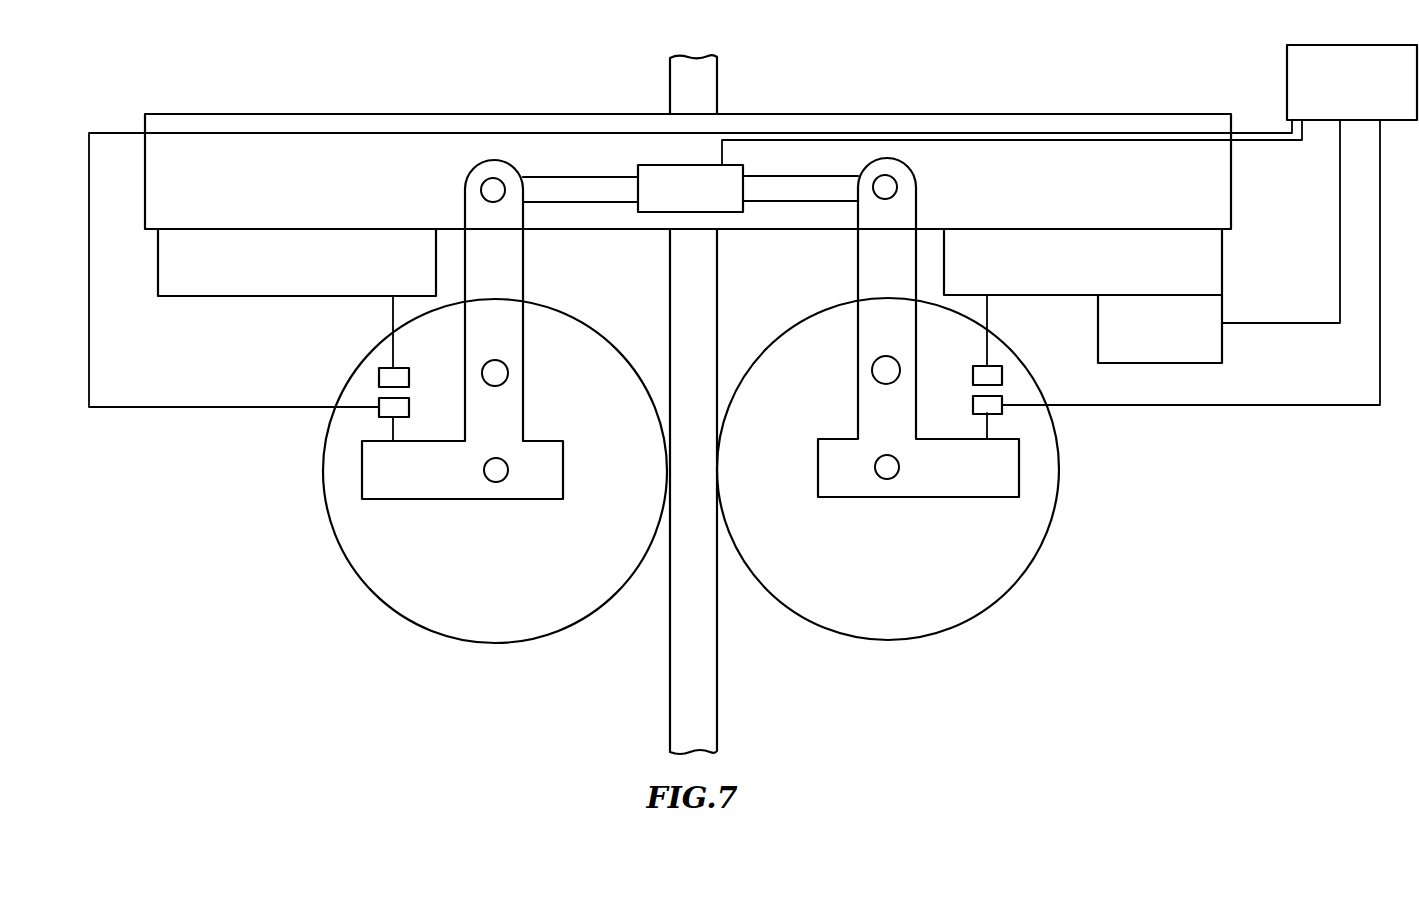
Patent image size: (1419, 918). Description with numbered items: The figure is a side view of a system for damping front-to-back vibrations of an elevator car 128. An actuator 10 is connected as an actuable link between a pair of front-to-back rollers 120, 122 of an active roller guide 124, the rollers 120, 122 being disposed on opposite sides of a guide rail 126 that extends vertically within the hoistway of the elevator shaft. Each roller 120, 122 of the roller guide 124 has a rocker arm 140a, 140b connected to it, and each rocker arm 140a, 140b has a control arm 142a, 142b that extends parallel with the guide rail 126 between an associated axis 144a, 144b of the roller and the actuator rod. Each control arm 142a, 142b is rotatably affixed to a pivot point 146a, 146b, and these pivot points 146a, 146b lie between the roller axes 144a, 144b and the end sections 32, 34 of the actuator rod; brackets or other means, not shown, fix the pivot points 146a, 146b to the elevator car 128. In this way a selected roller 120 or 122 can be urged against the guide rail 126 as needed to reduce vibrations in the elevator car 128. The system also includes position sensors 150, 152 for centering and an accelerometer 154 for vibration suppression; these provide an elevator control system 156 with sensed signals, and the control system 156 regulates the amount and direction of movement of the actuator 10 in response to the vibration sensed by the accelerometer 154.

The actuator 10 is at (662, 173).
The end section of actuator rod 32 is at (565, 187).
The end section of actuator rod 34 is at (783, 183).
The front-to-back roller 120 is at (524, 601).
The front-to-back roller 122 is at (929, 581).
The active roller guide 124 is at (688, 133).
The guide rail 126 is at (683, 683).
The elevator car 128 is at (265, 114).
The rocker arm 140a is at (490, 358).
The rocker arm 140b is at (889, 358).
The control arm 142a is at (505, 265).
The control arm 142b is at (873, 258).
The axis of roller 144a is at (496, 482).
The axis of roller 144b is at (885, 478).
The pivot point 146a is at (500, 375).
The pivot point 146b is at (882, 380).
The position sensor 150 is at (380, 372).
The position sensor 152 is at (997, 408).
The accelerometer 154 is at (1180, 345).
The elevator control system 156 is at (1374, 102).